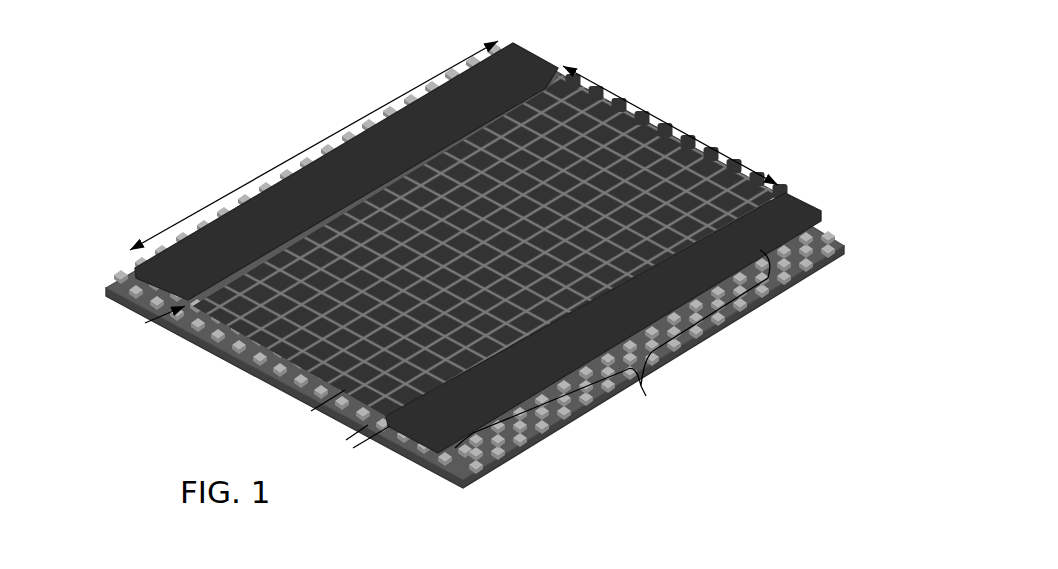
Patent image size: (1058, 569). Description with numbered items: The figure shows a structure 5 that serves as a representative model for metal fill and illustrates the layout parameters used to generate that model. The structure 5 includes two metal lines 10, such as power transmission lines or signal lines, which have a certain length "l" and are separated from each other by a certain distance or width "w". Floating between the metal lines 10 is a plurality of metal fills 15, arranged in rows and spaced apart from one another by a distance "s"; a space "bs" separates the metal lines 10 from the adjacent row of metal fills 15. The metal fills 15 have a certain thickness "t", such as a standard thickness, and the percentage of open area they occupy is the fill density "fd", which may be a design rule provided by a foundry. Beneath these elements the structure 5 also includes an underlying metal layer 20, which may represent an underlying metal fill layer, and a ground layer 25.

The structure 5 is at (454, 264).
The metal lines 10 is at (540, 43).
The metal fills 15 is at (238, 327).
The underlying metal layer 20 is at (118, 270).
The ground layer 25 is at (551, 414).